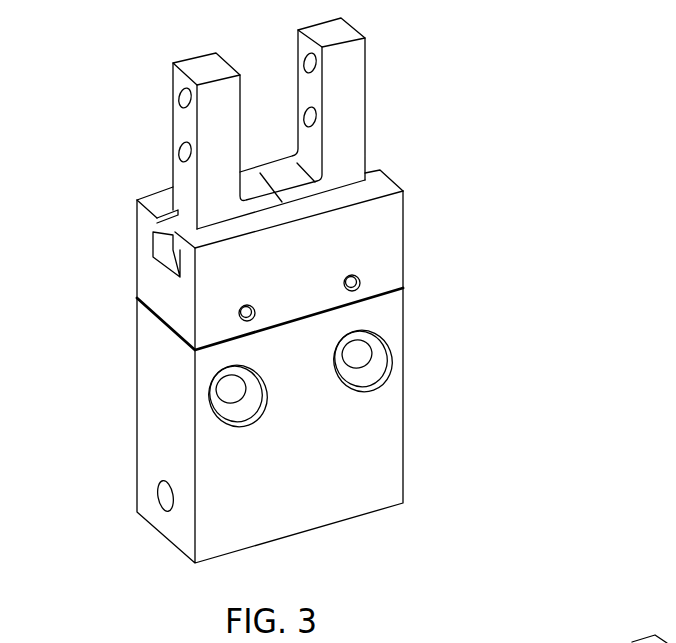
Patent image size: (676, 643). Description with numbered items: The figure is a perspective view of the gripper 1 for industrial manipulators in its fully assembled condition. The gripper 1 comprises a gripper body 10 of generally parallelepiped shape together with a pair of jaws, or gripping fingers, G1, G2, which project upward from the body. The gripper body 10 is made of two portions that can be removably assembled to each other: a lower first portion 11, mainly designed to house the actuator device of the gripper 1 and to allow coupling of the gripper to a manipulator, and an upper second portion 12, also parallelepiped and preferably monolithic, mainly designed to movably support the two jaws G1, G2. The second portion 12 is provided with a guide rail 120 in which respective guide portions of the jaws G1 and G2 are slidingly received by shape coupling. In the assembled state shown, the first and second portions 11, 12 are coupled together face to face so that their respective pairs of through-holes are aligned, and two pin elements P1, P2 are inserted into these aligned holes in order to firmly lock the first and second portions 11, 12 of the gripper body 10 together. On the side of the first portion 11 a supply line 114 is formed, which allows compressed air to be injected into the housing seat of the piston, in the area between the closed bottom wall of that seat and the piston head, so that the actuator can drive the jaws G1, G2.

The gripper 1 is at (492, 147).
The gripper body 10 is at (343, 488).
The first portion 11 is at (406, 440).
The second portion 12 is at (405, 233).
The supply line 114 is at (162, 497).
The guide rail 120 is at (115, 243).
The pin element P1 is at (239, 321).
The pin element P2 is at (359, 290).
The gripping finger G1 is at (173, 170).
The gripping finger G2 is at (367, 94).